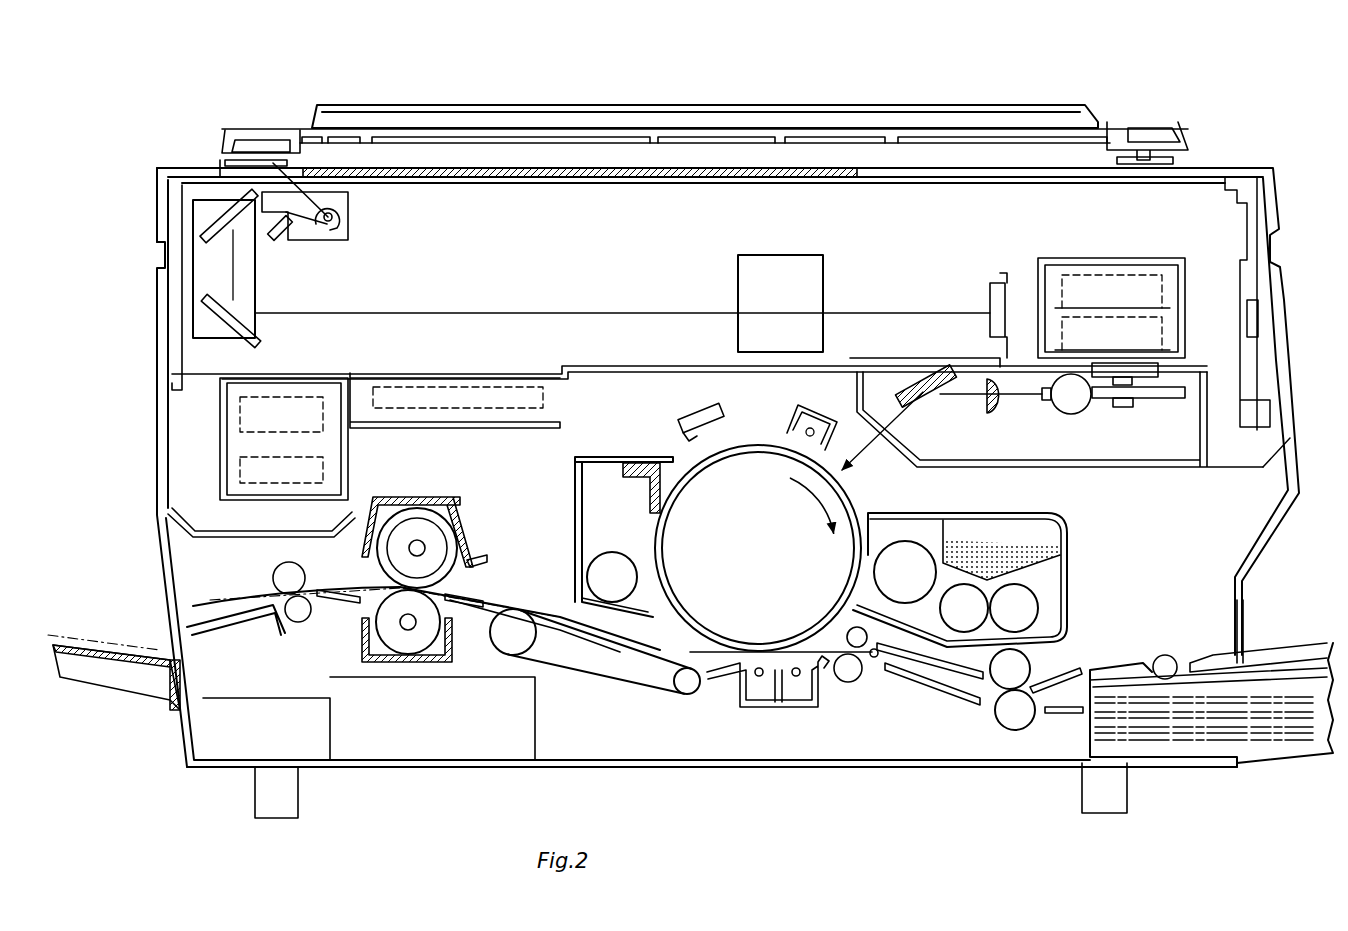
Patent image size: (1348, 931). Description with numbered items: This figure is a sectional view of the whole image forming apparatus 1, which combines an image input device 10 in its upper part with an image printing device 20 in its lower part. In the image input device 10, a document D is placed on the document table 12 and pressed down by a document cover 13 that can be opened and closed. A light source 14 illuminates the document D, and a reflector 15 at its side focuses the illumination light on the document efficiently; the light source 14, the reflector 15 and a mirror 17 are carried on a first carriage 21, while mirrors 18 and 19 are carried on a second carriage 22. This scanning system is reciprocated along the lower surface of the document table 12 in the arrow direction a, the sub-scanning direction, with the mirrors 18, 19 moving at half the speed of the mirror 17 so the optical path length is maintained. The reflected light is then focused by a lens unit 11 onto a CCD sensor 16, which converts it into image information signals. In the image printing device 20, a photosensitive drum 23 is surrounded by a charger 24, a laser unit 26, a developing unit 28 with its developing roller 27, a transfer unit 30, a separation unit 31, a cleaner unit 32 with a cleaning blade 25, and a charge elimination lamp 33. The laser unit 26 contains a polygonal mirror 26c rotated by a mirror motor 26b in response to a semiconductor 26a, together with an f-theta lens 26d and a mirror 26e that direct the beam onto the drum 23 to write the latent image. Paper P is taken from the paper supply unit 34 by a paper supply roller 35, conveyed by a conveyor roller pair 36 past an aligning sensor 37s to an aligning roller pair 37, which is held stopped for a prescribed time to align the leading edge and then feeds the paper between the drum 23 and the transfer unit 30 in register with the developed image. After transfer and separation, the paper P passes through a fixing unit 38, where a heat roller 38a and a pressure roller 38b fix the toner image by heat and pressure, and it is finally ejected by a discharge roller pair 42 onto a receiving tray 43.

The image forming apparatus 1 is at (1275, 548).
The image input device 10 is at (183, 162).
The lens unit 11 is at (780, 255).
The document table 12 is at (652, 180).
The document cover 13 is at (688, 100).
The light source 14 is at (331, 210).
The reflector 15 is at (318, 228).
The CCD sensor 16 is at (995, 283).
The mirror 17 is at (283, 242).
The mirror 18 is at (215, 227).
The mirror 19 is at (215, 320).
The image printing device 20 is at (940, 770).
The first carriage 21 is at (350, 206).
The second carriage 22 is at (215, 345).
The photosensitive drum 23 is at (748, 442).
The charger 24 is at (820, 410).
The cleaning blade 25 is at (650, 497).
The laser unit 26 is at (1148, 470).
The semiconductor 26a is at (1071, 398).
The mirror motor 26b is at (1170, 372).
The polygonal mirror 26c is at (1168, 399).
The f θ lens 26d is at (992, 412).
The mirror 26e is at (908, 380).
The developing roller 27 is at (900, 560).
The developing unit 28 is at (1068, 603).
The transfer unit 30 is at (797, 690).
The separation unit 31 is at (758, 700).
The cleaner unit 32 is at (575, 483).
The charge elimination lamp 33 is at (693, 413).
The paper supply unit 34 is at (1302, 652).
The paper supply roller 35 is at (1168, 656).
The conveyor roller pair 36 is at (594, 664).
The aligning roller pair 37 is at (843, 632).
The aligning sensor 37s is at (874, 658).
The fixing unit 38 is at (470, 532).
The heat roller 38a is at (440, 579).
The pressure roller 38b is at (416, 632).
The discharge roller pair 42 is at (293, 608).
The receiving tray 43 is at (117, 650).
The document D is at (512, 165).
The paper P is at (1257, 663).
The arrow direction a is at (590, 213).